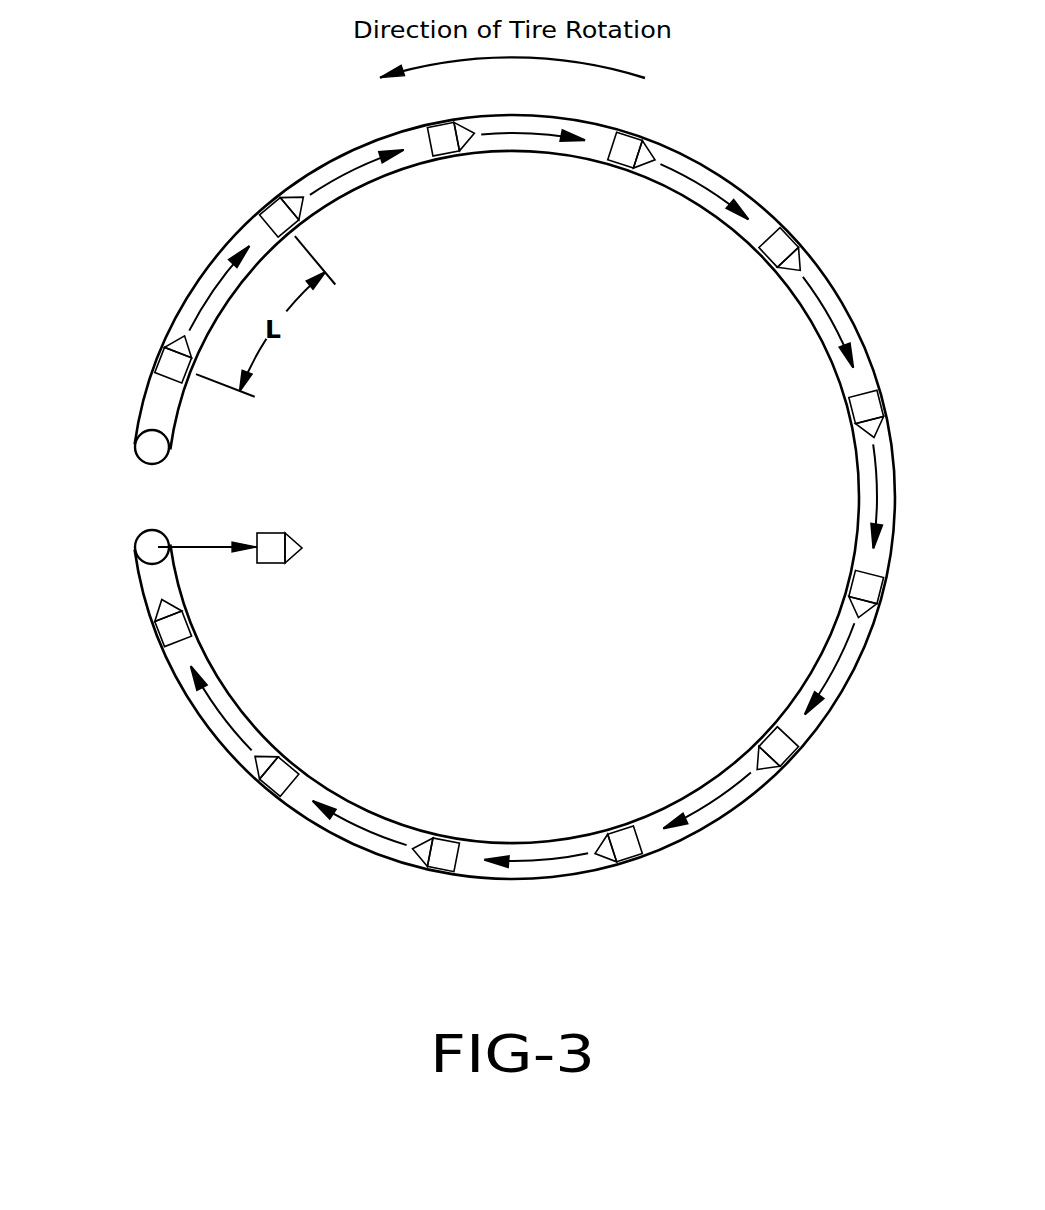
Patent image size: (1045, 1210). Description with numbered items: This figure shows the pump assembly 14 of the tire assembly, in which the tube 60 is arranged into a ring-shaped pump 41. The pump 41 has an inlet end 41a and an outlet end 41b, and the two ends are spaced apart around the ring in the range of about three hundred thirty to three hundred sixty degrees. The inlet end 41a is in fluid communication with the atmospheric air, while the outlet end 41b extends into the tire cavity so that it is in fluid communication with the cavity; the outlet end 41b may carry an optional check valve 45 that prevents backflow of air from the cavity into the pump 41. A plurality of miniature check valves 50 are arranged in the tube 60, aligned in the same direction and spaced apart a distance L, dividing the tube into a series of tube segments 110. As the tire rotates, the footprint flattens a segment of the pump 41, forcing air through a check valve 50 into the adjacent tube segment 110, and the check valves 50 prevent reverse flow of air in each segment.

The pump assembly 14 is at (403, 205).
The pump 41 is at (515, 483).
The inlet end 41a is at (148, 447).
The outlet end 41b is at (147, 558).
The check valve 45 is at (275, 532).
The check valve 50 is at (443, 147).
The tube 60 is at (700, 152).
The tube segment 110 is at (525, 484).